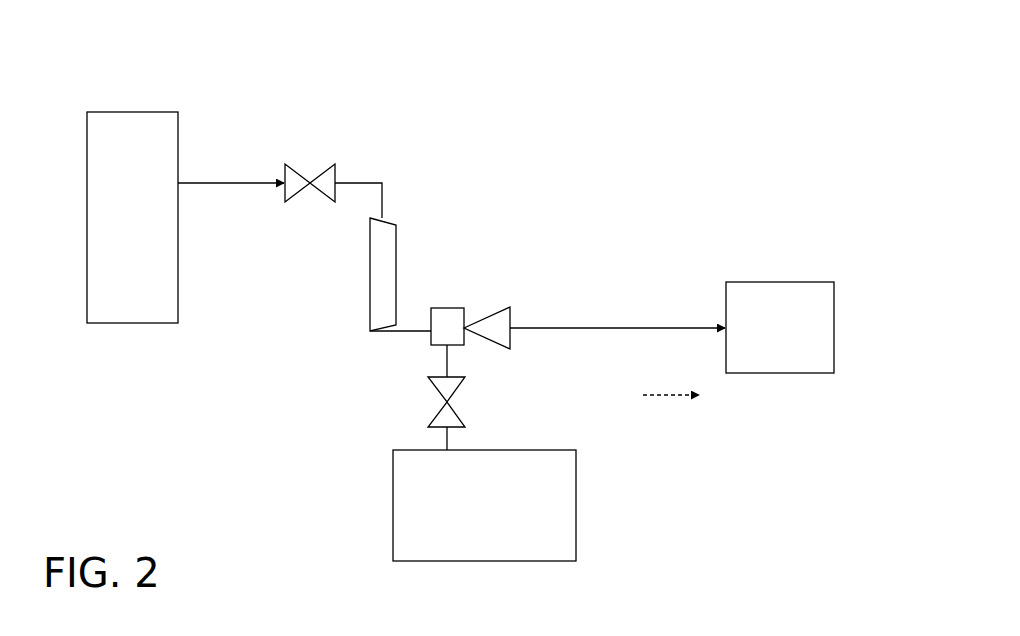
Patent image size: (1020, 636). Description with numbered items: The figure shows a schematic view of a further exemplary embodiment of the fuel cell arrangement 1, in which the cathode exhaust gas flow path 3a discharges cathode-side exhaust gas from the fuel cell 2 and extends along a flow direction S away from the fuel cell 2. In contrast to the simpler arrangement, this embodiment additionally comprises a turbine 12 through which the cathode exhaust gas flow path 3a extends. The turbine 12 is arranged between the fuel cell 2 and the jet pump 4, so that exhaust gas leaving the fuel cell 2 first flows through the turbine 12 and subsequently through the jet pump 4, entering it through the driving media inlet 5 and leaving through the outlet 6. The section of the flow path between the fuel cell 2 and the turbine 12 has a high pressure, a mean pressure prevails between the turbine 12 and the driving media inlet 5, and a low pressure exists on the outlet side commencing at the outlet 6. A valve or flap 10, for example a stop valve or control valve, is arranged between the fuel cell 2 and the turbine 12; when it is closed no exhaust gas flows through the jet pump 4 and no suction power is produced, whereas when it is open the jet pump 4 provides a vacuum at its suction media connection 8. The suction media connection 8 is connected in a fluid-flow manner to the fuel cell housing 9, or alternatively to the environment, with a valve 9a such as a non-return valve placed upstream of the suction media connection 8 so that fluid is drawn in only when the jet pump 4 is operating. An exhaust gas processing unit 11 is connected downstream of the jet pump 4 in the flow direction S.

The fuel cell arrangement 1 is at (682, 175).
The fuel cell 2 is at (122, 112).
The cathode exhaust gas flow path 3a is at (483, 222).
The jet pump 4 is at (480, 318).
The driving media inlet 5 is at (425, 318).
The outlet 6 is at (518, 320).
The suction media connection 8 is at (433, 355).
The fuel cell housing 9 is at (576, 533).
The valve 9a is at (458, 413).
The valve or flap 10 is at (298, 175).
The exhaust gas processing unit 11 is at (835, 350).
The turbine 12 is at (370, 288).
The flow direction S is at (643, 395).